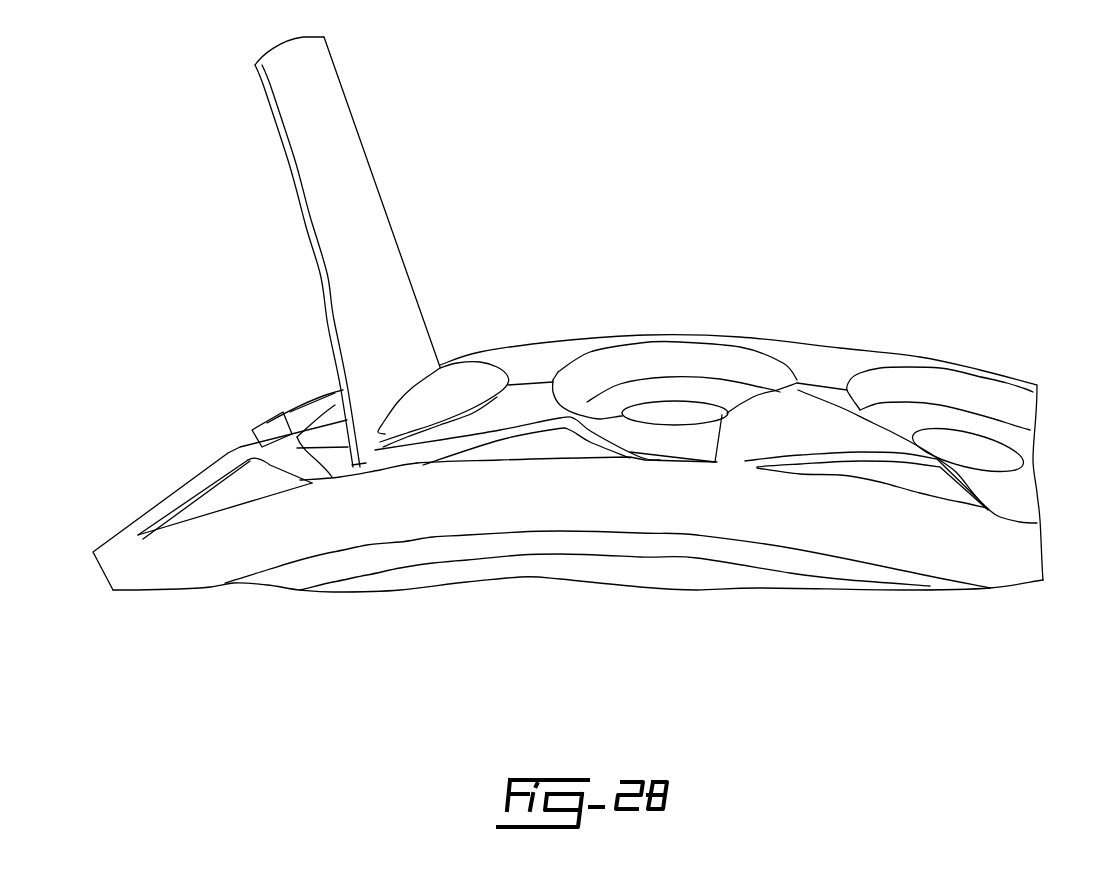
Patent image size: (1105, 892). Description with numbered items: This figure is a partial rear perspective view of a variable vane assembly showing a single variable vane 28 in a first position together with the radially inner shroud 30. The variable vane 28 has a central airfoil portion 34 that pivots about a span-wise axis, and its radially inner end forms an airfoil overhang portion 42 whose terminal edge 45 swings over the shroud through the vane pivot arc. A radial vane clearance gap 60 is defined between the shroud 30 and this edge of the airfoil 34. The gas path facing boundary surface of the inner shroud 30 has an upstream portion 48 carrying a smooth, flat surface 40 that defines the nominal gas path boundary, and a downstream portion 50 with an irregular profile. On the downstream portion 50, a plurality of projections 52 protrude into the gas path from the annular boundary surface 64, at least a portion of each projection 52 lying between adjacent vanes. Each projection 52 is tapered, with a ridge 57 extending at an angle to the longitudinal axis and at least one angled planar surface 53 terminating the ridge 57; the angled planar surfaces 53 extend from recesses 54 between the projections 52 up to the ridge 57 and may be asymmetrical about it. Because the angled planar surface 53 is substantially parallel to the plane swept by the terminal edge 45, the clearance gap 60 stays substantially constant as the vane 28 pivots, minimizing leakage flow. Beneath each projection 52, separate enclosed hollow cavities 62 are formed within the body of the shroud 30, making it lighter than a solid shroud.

The variable vane 28 is at (337, 77).
The central airfoil portion 34 is at (353, 173).
The radially inner shroud 30 is at (812, 345).
The smooth surface 40 is at (568, 348).
The annular boundary surface 64 is at (680, 424).
The upstream portion 48 is at (1052, 390).
The downstream portion 50 is at (1052, 480).
The projection 52 is at (270, 415).
The angled planar surface 53 is at (293, 450).
The ridge 57 is at (553, 380).
The enclosed hollow cavity 62 is at (247, 483).
The airfoil overhang portion 42 is at (325, 477).
The terminal edge 45 is at (355, 483).
The radial vane clearance gap 60 is at (371, 498).
The recess 54 is at (405, 435).